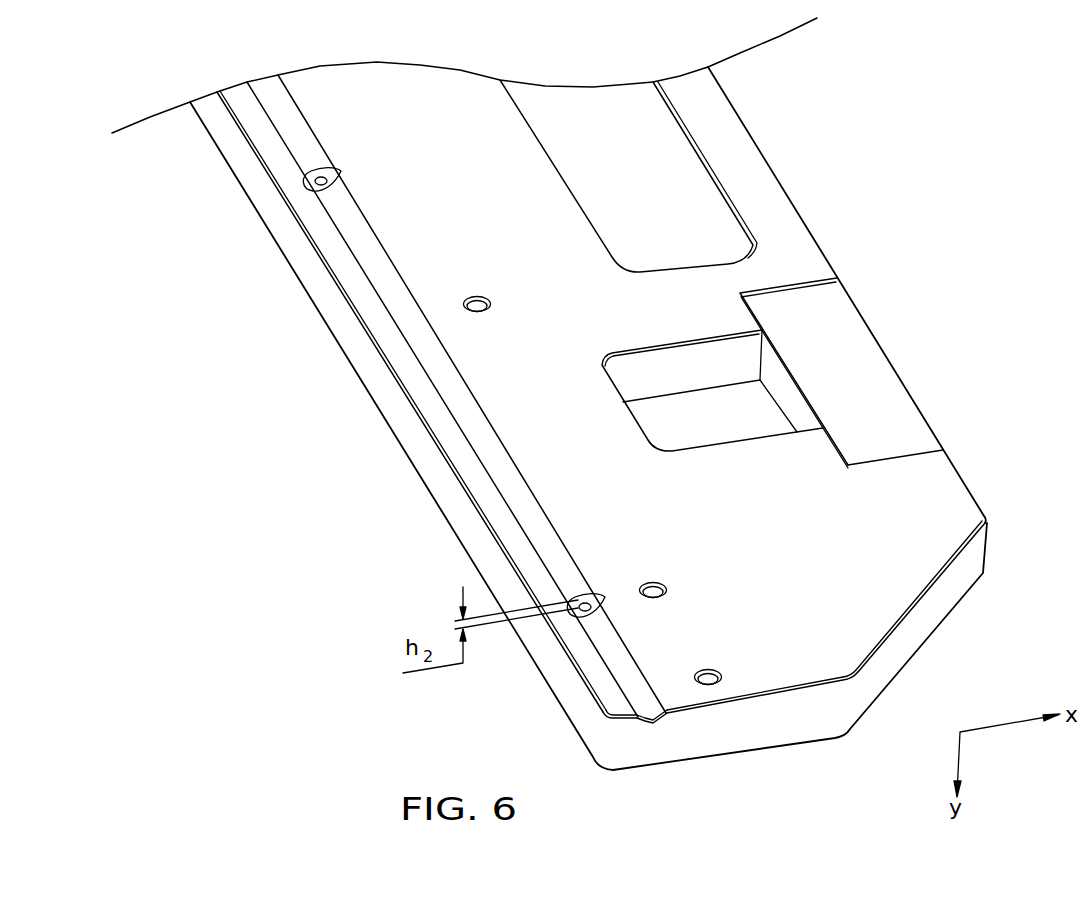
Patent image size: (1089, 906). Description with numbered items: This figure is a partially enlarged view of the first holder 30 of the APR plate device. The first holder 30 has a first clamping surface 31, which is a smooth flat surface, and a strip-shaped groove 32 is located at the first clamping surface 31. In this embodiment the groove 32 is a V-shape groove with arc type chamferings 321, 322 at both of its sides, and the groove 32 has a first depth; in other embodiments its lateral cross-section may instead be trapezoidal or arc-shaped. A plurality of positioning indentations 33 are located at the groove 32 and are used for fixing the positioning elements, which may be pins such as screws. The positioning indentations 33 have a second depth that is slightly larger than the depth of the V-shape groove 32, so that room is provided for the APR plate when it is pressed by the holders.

The first holder 30 is at (952, 115).
The first clamping surface 31 is at (778, 698).
The groove 32 is at (617, 665).
The arc type chamfering 321 is at (640, 723).
The arc type chamfering 322 is at (670, 716).
The positioning indentations 33 is at (318, 188).